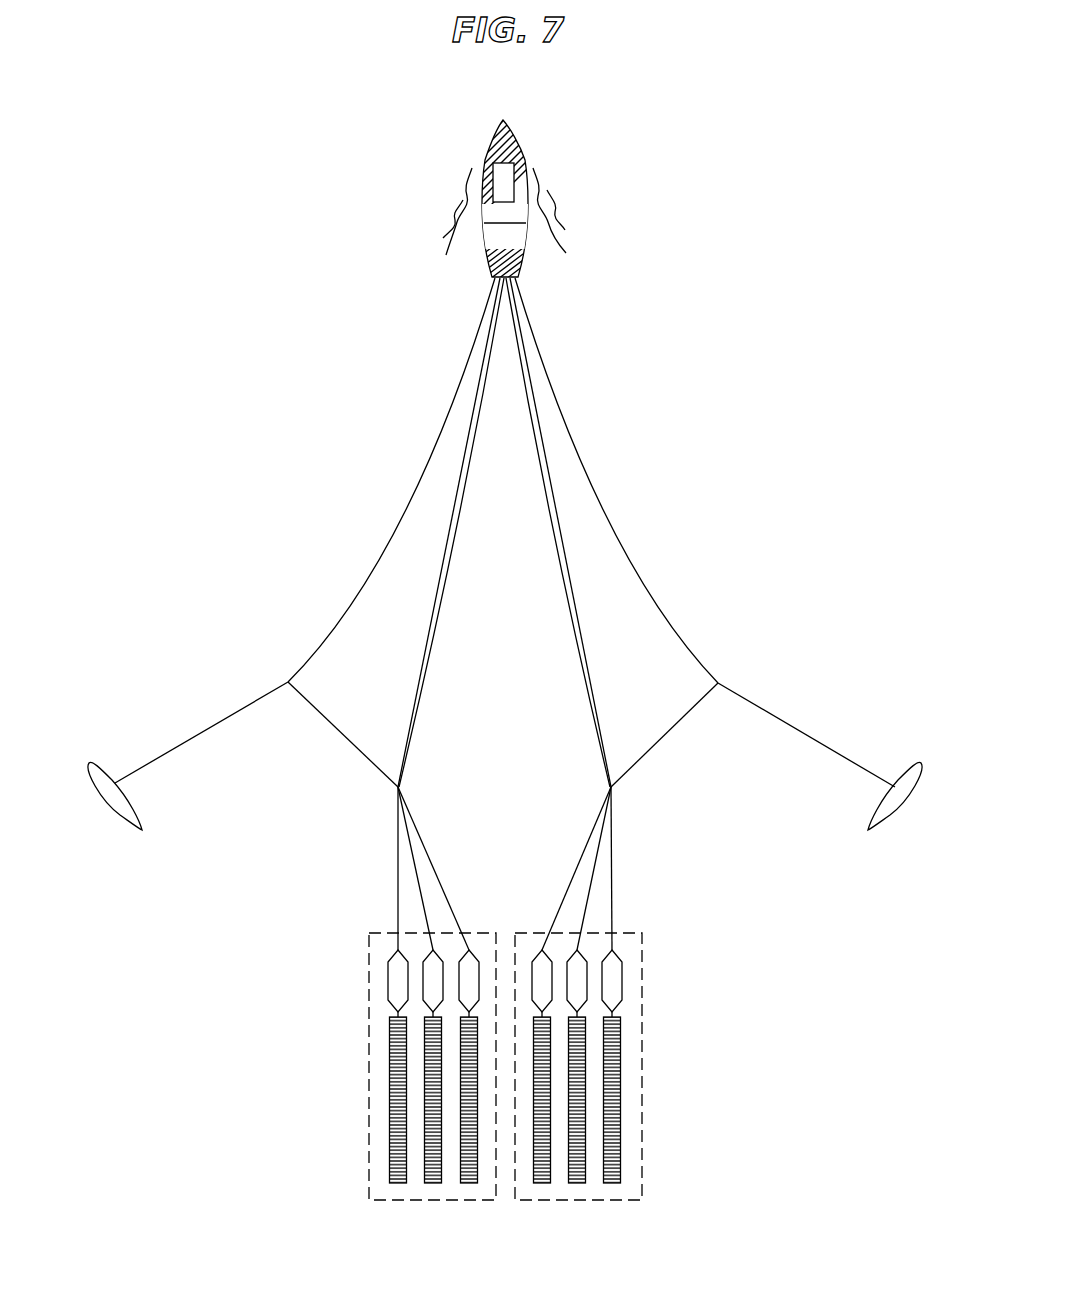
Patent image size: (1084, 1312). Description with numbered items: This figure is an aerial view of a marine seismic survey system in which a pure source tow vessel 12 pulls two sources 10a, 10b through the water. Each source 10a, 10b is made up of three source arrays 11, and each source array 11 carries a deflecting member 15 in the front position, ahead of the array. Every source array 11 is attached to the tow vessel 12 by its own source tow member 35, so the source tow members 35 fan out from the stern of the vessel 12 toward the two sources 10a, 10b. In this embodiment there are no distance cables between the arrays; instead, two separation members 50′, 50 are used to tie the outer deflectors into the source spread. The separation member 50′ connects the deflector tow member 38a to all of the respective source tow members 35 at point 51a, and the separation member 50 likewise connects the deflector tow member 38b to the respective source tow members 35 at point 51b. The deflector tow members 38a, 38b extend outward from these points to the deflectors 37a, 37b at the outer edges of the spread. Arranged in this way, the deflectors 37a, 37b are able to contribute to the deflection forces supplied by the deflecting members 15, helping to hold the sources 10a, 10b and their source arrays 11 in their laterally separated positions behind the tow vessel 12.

The pure source tow vessel 12 is at (497, 140).
The source tow member 35 is at (455, 495).
The deflector 37a is at (918, 763).
The deflector 37b is at (96, 763).
The deflector tow member 38a is at (825, 745).
The deflector tow member 38b is at (183, 745).
The separation member 50 is at (338, 737).
The separation member 50′ is at (670, 737).
The point 51a is at (613, 789).
The point 51b is at (397, 788).
The deflecting member 15 is at (433, 986).
The source array 11 is at (467, 1117).
The source 10a is at (642, 1158).
The source 10b is at (369, 1160).